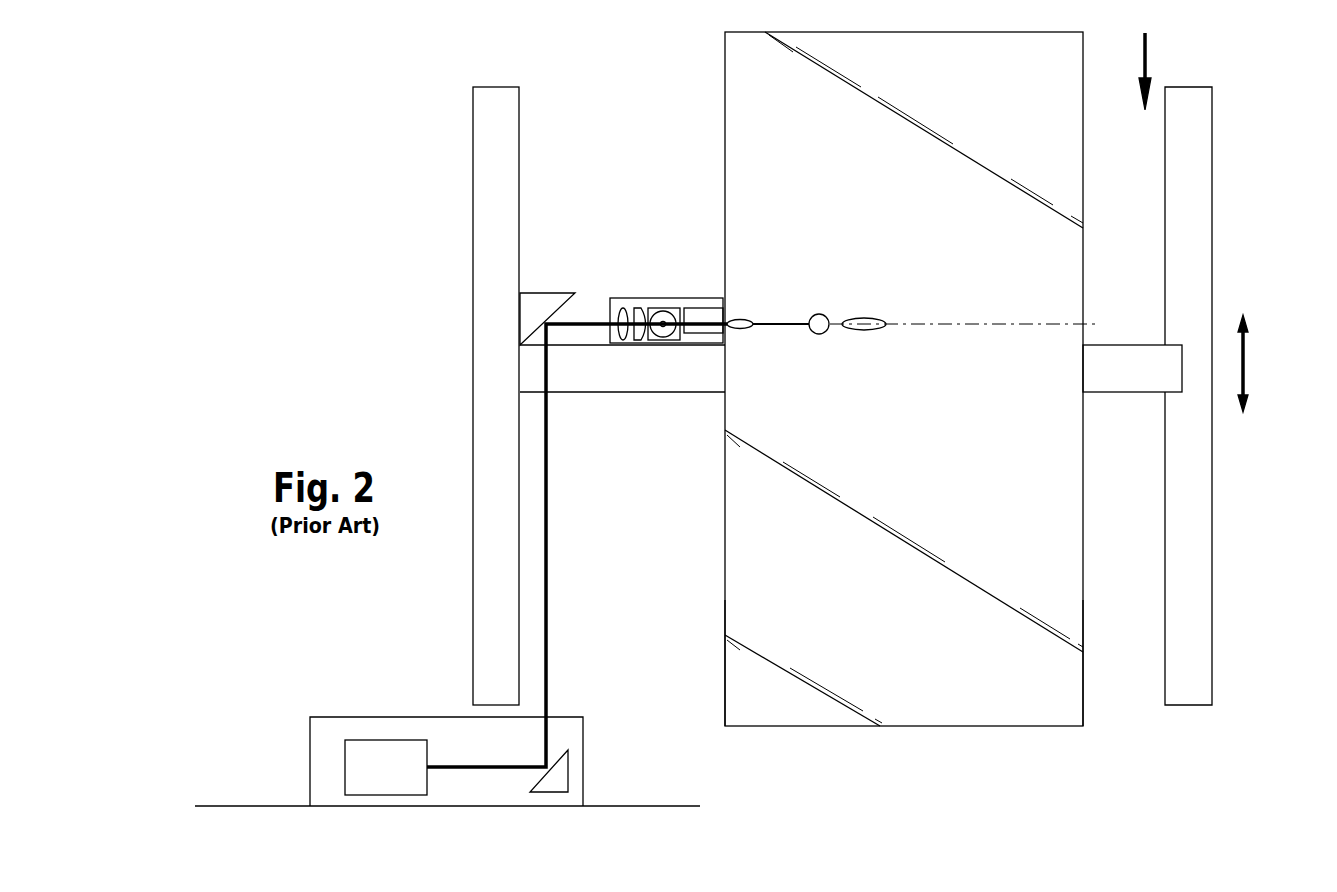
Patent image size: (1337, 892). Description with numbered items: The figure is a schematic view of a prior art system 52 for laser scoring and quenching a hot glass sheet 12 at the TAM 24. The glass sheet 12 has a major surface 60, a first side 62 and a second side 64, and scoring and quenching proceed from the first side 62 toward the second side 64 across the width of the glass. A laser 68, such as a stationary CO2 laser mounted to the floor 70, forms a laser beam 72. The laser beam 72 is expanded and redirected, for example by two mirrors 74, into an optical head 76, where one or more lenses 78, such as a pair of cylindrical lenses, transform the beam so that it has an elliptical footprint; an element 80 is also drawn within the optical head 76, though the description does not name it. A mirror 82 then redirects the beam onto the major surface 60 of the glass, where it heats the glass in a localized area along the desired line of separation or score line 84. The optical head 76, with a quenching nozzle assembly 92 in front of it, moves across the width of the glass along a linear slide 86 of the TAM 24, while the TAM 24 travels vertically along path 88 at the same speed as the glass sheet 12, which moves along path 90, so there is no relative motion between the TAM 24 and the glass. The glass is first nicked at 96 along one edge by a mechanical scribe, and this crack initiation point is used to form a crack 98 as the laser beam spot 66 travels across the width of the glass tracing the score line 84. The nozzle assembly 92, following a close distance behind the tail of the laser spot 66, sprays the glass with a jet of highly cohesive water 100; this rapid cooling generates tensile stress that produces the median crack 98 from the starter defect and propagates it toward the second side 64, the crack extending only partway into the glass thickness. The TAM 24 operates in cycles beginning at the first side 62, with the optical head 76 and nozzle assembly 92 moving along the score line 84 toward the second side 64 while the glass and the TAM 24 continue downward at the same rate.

The hot glass sheet 12 is at (1052, 72).
The TAM 24 is at (1239, 225).
The optical head 52 is at (656, 290).
The major surface 60 is at (830, 538).
The first side 62 is at (728, 741).
The second side 64 is at (1068, 742).
The laser beam spot 66 is at (862, 318).
The laser 68 is at (373, 753).
The floor 70 is at (247, 806).
The laser beam 72 is at (483, 770).
The mirrors 74 is at (537, 308).
The optical head 76 is at (694, 298).
The lenses 78 is at (622, 347).
The scanner 80 is at (684, 342).
The mirror 82 is at (707, 307).
The score line 84 is at (965, 323).
The linear slide 86 is at (1131, 360).
The path 88 is at (1247, 357).
The path 90 is at (1148, 57).
The quenching nozzle assembly 92 is at (655, 305).
The nick 96 is at (740, 320).
The crack 98 is at (795, 324).
The jet of highly cohesive water 100 is at (822, 334).